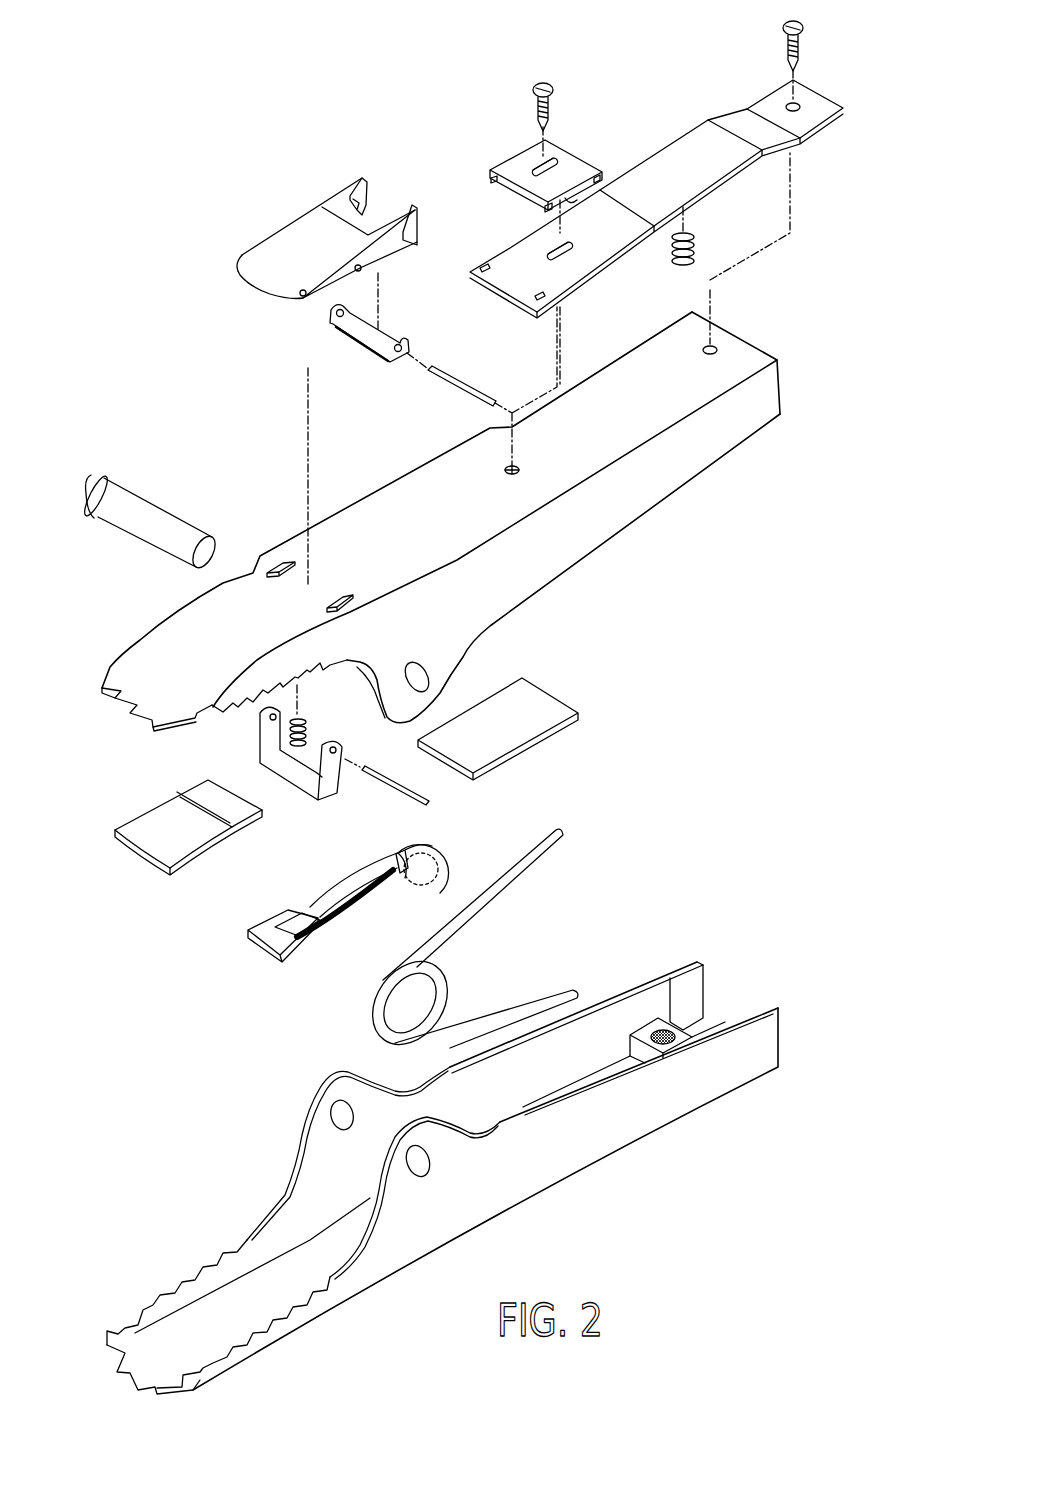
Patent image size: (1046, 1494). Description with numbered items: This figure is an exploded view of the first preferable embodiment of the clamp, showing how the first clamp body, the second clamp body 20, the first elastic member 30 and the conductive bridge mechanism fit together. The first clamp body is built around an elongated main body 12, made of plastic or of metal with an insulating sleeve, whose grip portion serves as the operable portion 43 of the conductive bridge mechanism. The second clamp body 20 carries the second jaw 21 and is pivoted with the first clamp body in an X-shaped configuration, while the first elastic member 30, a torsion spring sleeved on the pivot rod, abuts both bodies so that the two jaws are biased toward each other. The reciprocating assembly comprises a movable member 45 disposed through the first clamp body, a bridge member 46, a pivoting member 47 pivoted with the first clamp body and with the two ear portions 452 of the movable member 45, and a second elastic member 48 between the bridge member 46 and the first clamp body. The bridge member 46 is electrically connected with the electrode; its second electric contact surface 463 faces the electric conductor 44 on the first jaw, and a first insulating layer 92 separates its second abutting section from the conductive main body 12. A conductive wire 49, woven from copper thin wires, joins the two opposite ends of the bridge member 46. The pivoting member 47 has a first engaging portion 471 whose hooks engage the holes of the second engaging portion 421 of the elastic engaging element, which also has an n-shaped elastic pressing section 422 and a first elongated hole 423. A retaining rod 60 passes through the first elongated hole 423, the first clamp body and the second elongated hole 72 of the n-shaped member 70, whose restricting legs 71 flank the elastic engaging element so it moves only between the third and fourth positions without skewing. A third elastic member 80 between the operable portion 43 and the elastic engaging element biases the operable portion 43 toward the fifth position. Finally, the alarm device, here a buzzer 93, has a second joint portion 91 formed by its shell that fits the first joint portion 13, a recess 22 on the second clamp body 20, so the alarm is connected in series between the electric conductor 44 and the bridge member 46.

The main body 12 is at (297, 548).
The first joint portion 13 is at (600, 1040).
The second clamp body 20 is at (442, 1145).
The second jaw 21 is at (270, 1287).
The recess 22 is at (683, 1002).
The first elastic member 30 is at (377, 1017).
The operable portion 43 is at (740, 415).
The electric conductor 44 is at (150, 838).
The movable member 45 is at (322, 780).
The bridge member 46 is at (331, 904).
The pivoting member 47 is at (327, 212).
The second elastic member 48 is at (290, 737).
The conductive wire 49 is at (302, 947).
The retaining rod 60 is at (548, 118).
The n-shaped member 70 is at (563, 171).
The restricting legs 71 is at (567, 193).
The second elongated hole 72 is at (552, 160).
The third elastic member 80 is at (693, 245).
The second joint portion 91 is at (686, 1034).
The first insulating layer 92 is at (550, 705).
The buzzer 93 is at (662, 1023).
The second engaging portion 421 is at (558, 287).
The elastic pressing section 422 is at (703, 173).
The first elongated hole 423 is at (563, 253).
The ear portion 452 is at (335, 760).
The second electric contact surface 463 is at (260, 927).
The first engaging portion 471 is at (363, 208).